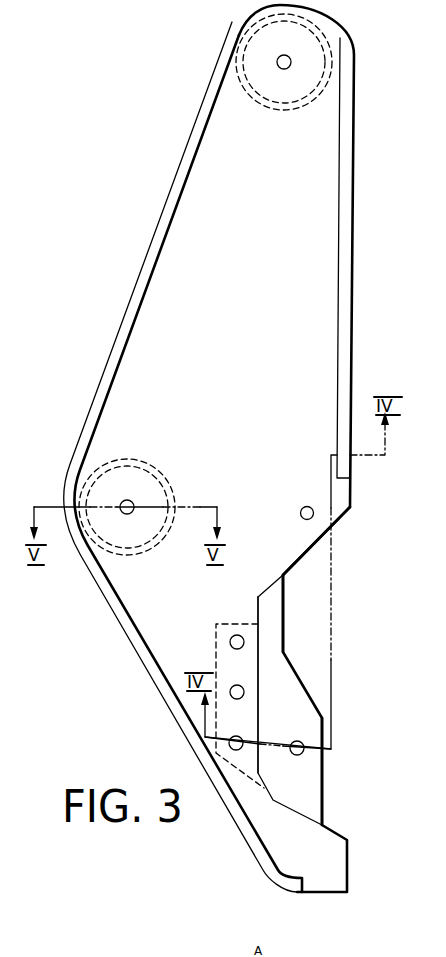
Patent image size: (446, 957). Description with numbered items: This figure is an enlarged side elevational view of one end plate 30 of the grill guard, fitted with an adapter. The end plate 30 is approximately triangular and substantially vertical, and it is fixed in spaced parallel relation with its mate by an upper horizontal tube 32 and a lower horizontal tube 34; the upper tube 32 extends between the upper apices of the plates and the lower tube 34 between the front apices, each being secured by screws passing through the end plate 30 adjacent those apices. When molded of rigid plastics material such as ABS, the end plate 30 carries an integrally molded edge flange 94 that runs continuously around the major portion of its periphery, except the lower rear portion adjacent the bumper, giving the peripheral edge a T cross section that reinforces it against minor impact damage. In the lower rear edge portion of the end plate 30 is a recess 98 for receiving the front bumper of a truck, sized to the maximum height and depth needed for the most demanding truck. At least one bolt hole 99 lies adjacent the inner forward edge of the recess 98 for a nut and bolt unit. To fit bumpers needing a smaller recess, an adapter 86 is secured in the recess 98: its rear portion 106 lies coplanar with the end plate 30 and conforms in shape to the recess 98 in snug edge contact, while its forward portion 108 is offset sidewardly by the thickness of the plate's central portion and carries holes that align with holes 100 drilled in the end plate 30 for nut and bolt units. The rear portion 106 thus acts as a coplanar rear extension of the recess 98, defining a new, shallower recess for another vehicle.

The end plate 30 is at (364, 166).
The upper horizontal tube 32 is at (255, 102).
The lower horizontal tube 34 is at (130, 458).
The edge flange 94 is at (145, 268).
The recess 98 is at (327, 531).
The bolt hole 99 is at (243, 693).
The holes 100 is at (237, 635).
The rear portion 106 is at (273, 642).
The forward portion 108 is at (213, 648).
The adapter 86 is at (325, 762).